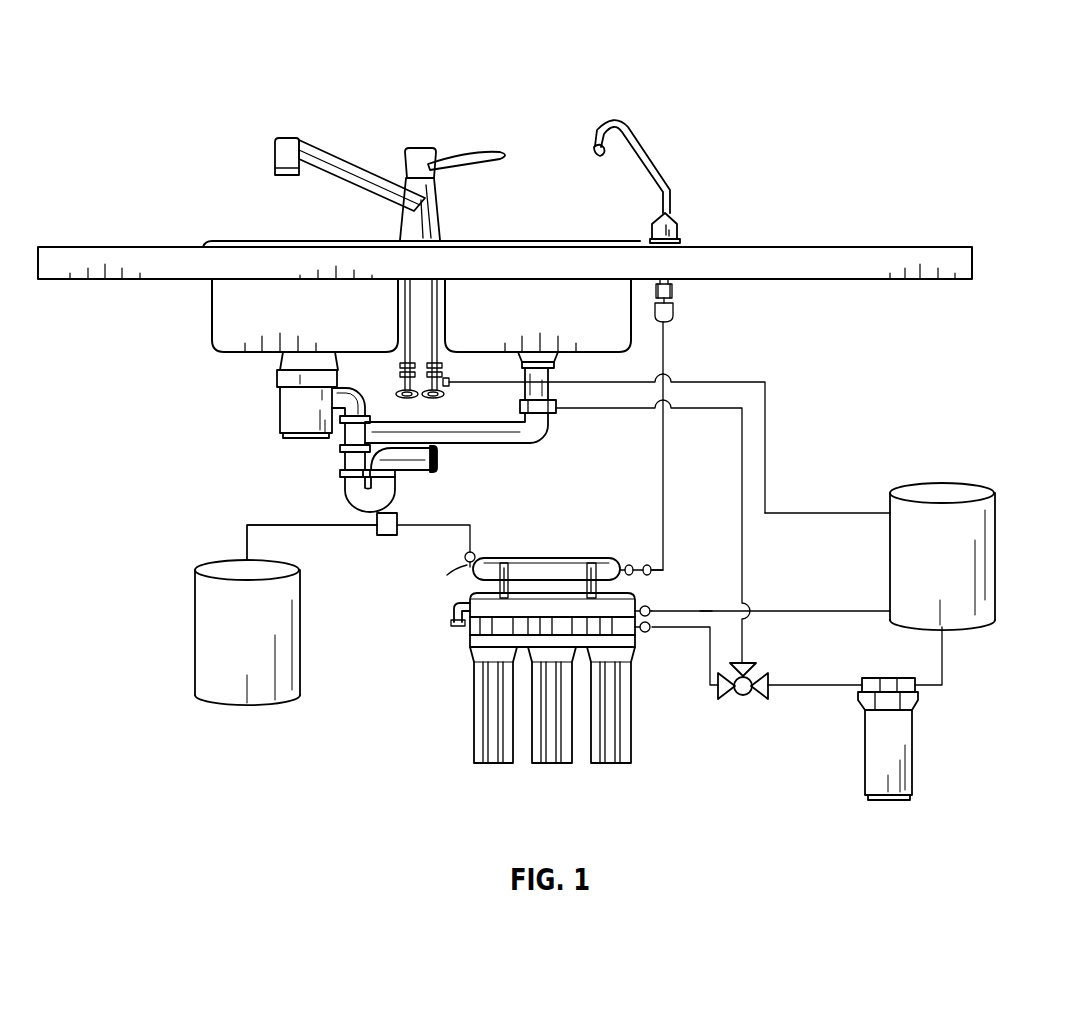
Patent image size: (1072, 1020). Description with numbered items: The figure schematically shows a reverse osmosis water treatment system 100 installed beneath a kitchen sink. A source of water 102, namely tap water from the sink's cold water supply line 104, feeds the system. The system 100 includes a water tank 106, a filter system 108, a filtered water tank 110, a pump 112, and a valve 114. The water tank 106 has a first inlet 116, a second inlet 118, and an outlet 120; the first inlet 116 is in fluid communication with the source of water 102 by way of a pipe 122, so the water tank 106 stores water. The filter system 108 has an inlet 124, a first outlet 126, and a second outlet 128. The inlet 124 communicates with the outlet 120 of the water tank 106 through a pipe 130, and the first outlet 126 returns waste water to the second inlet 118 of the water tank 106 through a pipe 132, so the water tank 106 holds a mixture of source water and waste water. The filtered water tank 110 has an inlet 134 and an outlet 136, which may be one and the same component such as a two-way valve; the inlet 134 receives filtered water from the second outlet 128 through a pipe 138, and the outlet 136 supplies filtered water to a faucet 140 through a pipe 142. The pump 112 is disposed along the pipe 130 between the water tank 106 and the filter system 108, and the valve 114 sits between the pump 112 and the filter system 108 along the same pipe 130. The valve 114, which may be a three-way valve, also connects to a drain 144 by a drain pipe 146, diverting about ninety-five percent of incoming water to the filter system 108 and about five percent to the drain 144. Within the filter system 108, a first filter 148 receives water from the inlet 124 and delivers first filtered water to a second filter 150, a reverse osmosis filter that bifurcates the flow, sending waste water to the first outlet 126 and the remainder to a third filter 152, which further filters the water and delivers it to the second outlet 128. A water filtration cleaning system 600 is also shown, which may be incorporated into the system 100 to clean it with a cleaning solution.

The reverse osmosis water treatment system 100 is at (118, 90).
The source of water 102 is at (448, 378).
The cold water supply line 104 is at (437, 298).
The water tank 106 is at (960, 492).
The filter system 108 is at (562, 557).
The filtered water tank 110 is at (193, 633).
The pump 112 is at (860, 752).
The valve 114 is at (748, 700).
The first inlet 116 is at (888, 512).
The second inlet 118 is at (888, 610).
The outlet 120 is at (945, 632).
The pipe 122 is at (768, 426).
The inlet 124 is at (650, 634).
The first outlet 126 is at (650, 607).
The second outlet 128 is at (462, 563).
The pipe 130 is at (843, 683).
The pipe 132 is at (705, 610).
The inlet 134 is at (247, 558).
The outlet 136 is at (312, 542).
The pipe 138 is at (288, 523).
The faucet 140 is at (650, 146).
The pipe 142 is at (662, 476).
The drain 144 is at (545, 436).
The drain pipe 146 is at (742, 470).
The first filter 148 is at (595, 641).
The second filter 150 is at (556, 766).
The third filter 152 is at (470, 713).
The water filtration cleaning system 600 is at (375, 530).